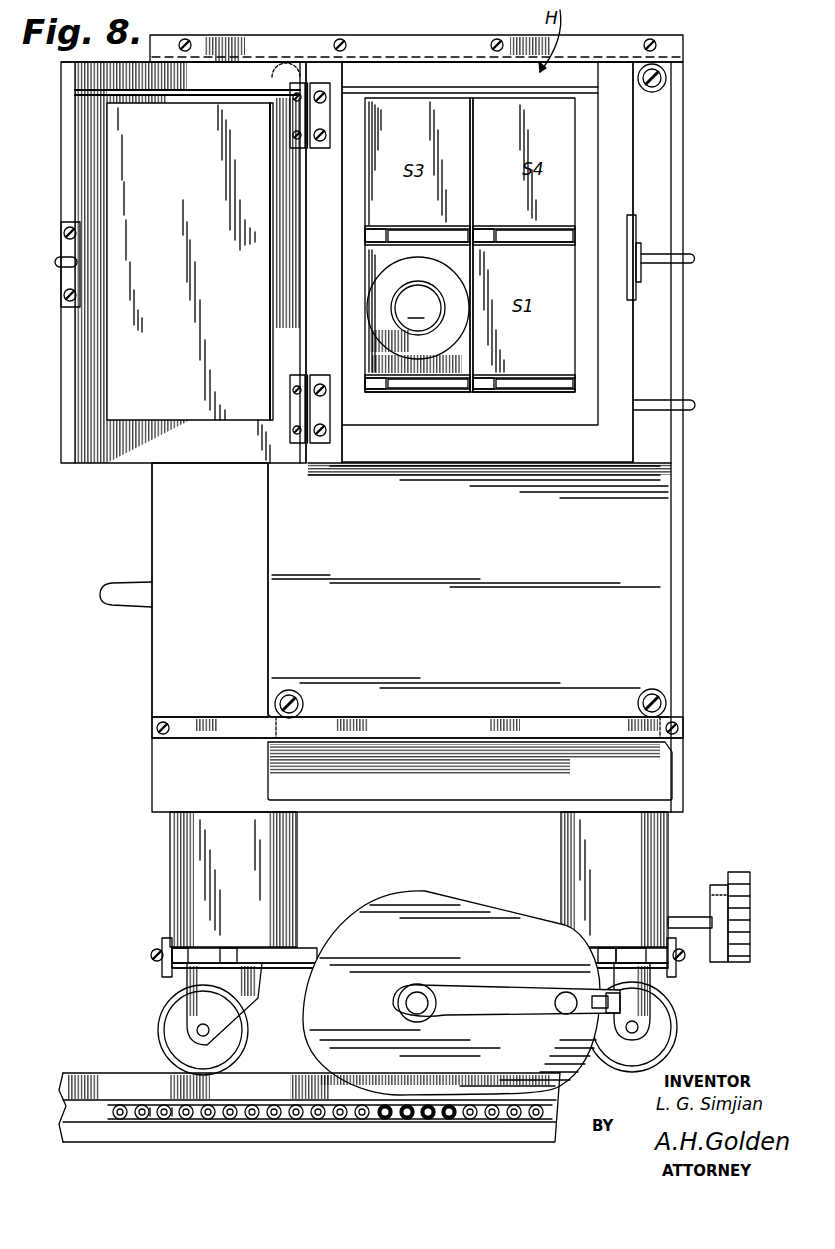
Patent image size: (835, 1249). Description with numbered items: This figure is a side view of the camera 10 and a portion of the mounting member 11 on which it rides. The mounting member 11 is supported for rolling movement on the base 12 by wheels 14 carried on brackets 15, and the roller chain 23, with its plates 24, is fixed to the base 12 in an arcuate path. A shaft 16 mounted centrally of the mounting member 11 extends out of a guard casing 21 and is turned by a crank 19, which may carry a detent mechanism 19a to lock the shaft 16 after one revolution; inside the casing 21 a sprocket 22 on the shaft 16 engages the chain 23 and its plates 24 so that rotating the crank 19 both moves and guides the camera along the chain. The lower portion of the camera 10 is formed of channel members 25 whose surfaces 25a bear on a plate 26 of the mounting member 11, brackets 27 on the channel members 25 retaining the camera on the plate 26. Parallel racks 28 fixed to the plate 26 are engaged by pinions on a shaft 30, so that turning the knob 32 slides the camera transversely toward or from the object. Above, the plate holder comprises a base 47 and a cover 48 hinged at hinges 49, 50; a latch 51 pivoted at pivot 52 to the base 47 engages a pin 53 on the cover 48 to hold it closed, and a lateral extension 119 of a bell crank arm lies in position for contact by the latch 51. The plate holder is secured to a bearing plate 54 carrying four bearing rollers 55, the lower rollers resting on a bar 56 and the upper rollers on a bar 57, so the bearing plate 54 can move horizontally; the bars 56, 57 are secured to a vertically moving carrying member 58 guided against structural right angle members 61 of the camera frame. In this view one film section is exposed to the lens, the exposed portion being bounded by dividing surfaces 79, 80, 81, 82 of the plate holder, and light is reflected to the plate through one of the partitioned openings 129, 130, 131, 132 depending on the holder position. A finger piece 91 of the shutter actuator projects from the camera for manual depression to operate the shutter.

The camera 10 is at (690, 144).
The mounting member 11 is at (176, 976).
The base 12 is at (88, 1138).
The wheels 14 is at (158, 1030).
The brackets 15 is at (196, 1008).
The shaft 16 is at (408, 1004).
The crank 19 is at (465, 990).
The detent mechanism 19a is at (598, 1006).
The guard casing 21 is at (438, 892).
The sprocket 22 is at (394, 1122).
The roller chain 23 is at (312, 1122).
The plates 24 is at (224, 1120).
The channel members 25 is at (305, 946).
The surfaces 25a is at (172, 930).
The plate 26 is at (280, 965).
The brackets 27 is at (164, 966).
The racks 28 is at (232, 947).
The shaft 30 is at (684, 916).
The knob 32 is at (740, 872).
The base 47 is at (418, 447).
The cover 48 is at (174, 263).
The hinge 49 is at (300, 396).
The hinge 50 is at (291, 126).
The latch 51 is at (638, 248).
The pivot 52 is at (641, 268).
The pin 53 is at (60, 258).
The bearing plate 54 is at (470, 540).
The bearing rollers 55 is at (270, 73).
The bar 56 is at (390, 716).
The bar 57 is at (372, 38).
The carrying member 58 is at (228, 537).
The structural right angle members 61 is at (292, 830).
The dividing surface 79 is at (473, 140).
The dividing surface 80 is at (410, 252).
The dividing surface 81 is at (398, 226).
The dividing surface 82 is at (418, 385).
The finger piece 91 is at (118, 582).
The lateral extension of arm 119 is at (662, 256).
The partitioned opening 129 is at (430, 388).
The partitioned opening 130 is at (514, 386).
The partitioned opening 131 is at (514, 240).
The partitioned opening 132 is at (418, 237).